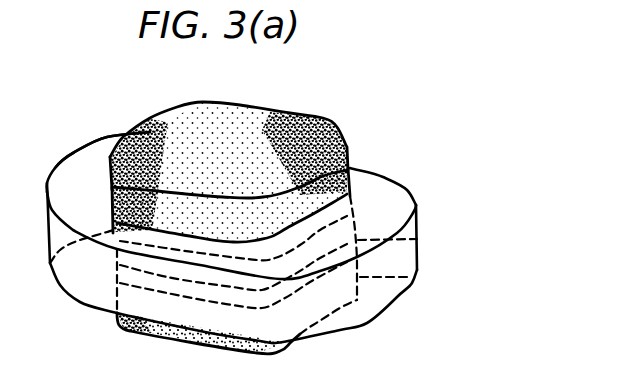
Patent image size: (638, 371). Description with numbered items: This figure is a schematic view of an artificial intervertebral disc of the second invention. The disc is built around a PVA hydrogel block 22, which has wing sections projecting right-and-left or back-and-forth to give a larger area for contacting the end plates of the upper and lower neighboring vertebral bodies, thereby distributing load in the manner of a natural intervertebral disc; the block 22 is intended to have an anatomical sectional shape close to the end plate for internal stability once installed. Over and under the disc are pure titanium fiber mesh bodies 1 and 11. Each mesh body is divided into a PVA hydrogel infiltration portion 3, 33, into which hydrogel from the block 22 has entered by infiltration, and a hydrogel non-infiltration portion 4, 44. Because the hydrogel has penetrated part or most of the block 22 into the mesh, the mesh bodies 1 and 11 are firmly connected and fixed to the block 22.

The pure titanium fiber mesh body 1 is at (278, 202).
The PVA hydrogel infiltration portion 3 is at (254, 224).
The hydrogel non-infiltration portion 4 is at (270, 128).
The pure titanium fiber mesh body 11 is at (309, 237).
The PVA hydrogel block 22 is at (110, 137).
The PVA hydrogel infiltration portion 33 is at (402, 250).
The hydrogel non-infiltration portion 44 is at (395, 300).